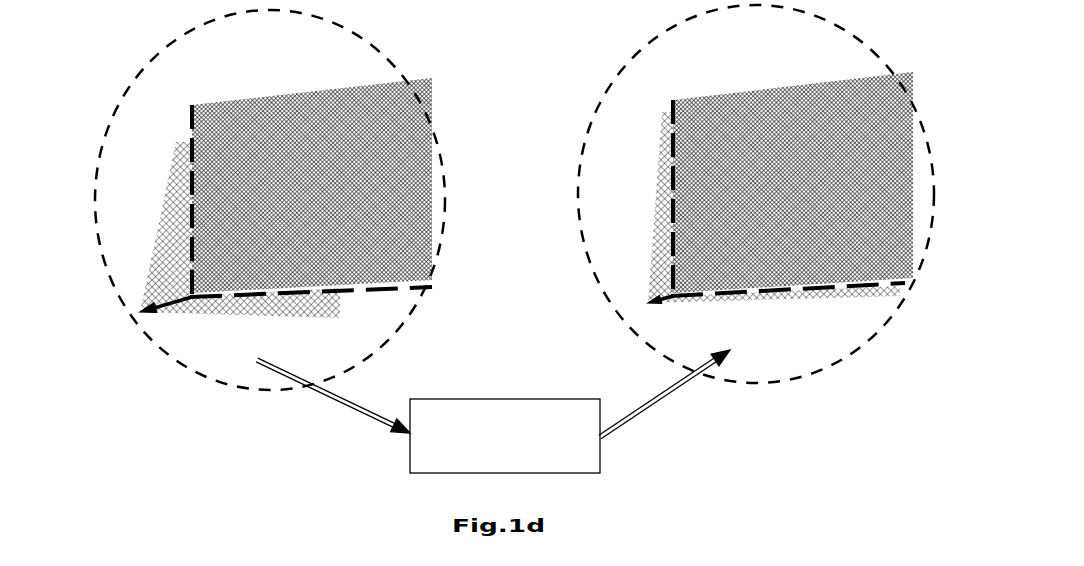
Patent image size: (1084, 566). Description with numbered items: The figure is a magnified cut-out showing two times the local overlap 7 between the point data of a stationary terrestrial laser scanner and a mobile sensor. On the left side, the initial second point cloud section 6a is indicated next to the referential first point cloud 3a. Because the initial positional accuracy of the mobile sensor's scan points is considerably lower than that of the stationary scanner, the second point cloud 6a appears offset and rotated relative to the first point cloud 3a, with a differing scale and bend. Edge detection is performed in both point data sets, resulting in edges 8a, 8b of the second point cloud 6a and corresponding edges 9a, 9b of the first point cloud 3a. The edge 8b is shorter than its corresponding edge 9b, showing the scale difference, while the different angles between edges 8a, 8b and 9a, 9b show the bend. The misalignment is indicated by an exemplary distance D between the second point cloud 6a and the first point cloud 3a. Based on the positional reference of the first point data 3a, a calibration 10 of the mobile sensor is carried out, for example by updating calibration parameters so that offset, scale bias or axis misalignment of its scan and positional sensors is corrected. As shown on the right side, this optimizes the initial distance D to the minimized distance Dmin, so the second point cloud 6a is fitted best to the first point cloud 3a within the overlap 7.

The local overlap 7 is at (163, 82).
The first 3D point cloud 3a is at (352, 93).
The edge of second point cloud 8a is at (160, 203).
The edge of second point cloud 8b is at (297, 323).
The edge of first point cloud 9a is at (190, 128).
The edge of first point cloud 9b is at (333, 293).
The second 3D point cloud section 6a is at (160, 267).
The distance D is at (170, 317).
The minimized distance Dmin is at (668, 303).
The calibration 10 is at (470, 398).